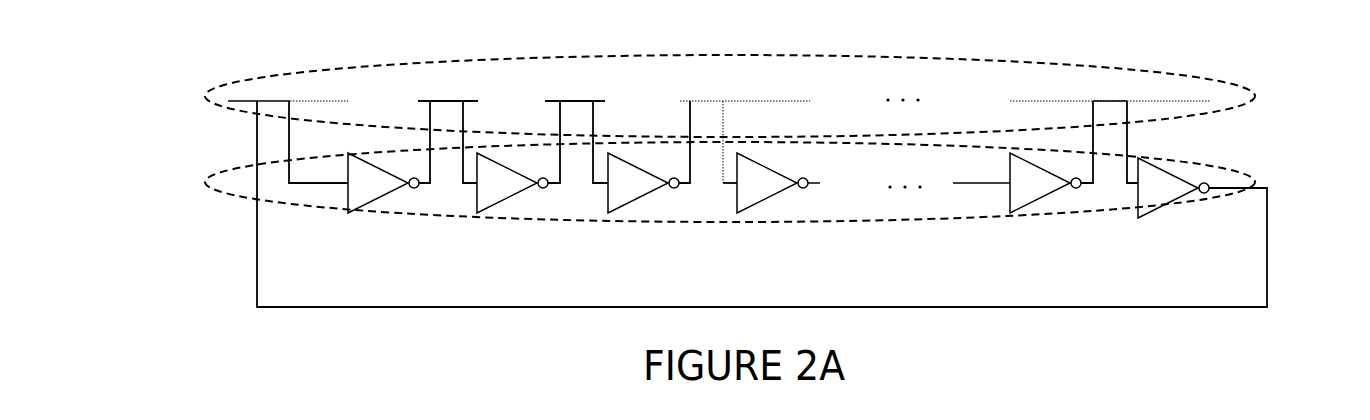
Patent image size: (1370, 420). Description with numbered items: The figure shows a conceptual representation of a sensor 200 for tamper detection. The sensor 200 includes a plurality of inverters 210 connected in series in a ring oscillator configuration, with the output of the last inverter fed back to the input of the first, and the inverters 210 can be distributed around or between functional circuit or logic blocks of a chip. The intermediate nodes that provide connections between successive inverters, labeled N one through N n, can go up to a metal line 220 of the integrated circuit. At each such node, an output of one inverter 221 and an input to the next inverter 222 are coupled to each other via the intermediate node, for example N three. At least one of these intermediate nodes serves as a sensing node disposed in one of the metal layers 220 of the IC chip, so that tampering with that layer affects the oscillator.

The sensor 200 is at (205, 142).
The inverters 210 is at (1246, 172).
The metal line 220 is at (1253, 100).
The output of inverter 221 is at (558, 122).
The input to inverter 222 is at (593, 122).